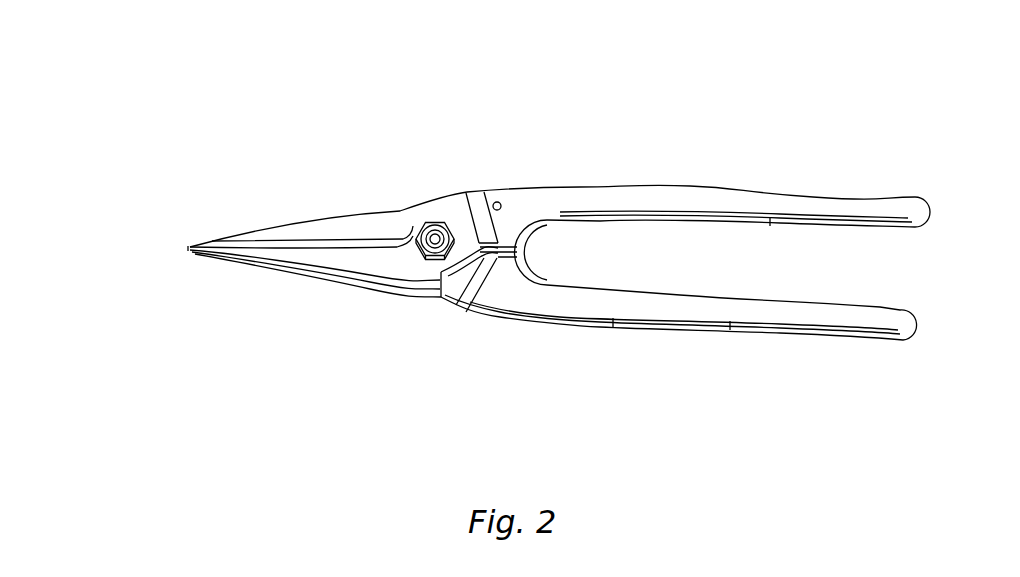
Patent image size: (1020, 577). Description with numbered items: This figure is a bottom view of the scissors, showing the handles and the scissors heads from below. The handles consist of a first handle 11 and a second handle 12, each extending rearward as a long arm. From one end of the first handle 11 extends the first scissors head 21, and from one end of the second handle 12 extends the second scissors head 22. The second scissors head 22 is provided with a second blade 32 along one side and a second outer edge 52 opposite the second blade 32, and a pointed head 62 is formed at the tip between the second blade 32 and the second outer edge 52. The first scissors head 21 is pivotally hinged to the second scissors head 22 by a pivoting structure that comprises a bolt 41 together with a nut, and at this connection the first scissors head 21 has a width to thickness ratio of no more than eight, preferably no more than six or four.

The first handle 11 is at (680, 335).
The second handle 12 is at (737, 190).
The first blade 21 is at (328, 165).
The second blade 22 is at (315, 338).
The cutting edge of first blade 32 is at (290, 236).
The pivot nut 41 is at (437, 220).
The cutting edge of second blade 52 is at (283, 280).
The blade tip 62 is at (183, 245).